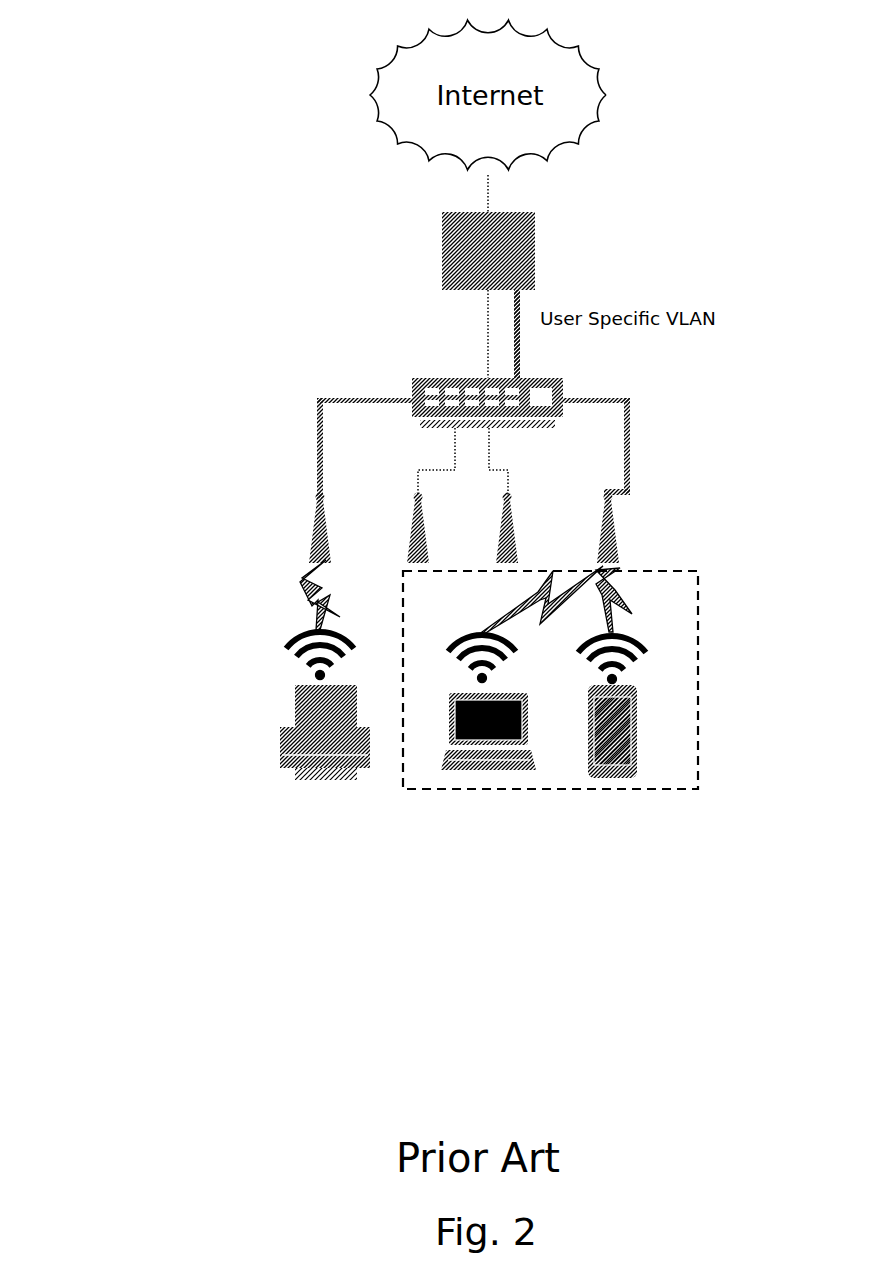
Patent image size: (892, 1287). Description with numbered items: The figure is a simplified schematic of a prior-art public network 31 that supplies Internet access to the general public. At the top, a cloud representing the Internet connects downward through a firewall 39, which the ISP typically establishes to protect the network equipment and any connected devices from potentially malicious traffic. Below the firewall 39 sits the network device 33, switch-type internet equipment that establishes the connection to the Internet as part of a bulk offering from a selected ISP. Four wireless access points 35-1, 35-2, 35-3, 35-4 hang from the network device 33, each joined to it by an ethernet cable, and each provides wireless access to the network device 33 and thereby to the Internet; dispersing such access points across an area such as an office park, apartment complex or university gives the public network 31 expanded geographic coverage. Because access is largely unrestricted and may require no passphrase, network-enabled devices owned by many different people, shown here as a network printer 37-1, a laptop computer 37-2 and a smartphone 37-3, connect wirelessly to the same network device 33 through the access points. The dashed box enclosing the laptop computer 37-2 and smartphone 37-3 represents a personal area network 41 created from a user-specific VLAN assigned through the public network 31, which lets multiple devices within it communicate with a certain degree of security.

The public network 31 is at (190, 786).
The network device 33 is at (440, 378).
The wireless access point 35-1 is at (318, 527).
The wireless access point 35-2 is at (408, 548).
The wireless access point 35-3 is at (517, 545).
The wireless access point 35-4 is at (617, 540).
The network printer 37-1 is at (323, 777).
The laptop computer 37-2 is at (512, 770).
The smartphone 37-3 is at (622, 778).
The firewall 39 is at (447, 248).
The personal area network 41 is at (698, 627).